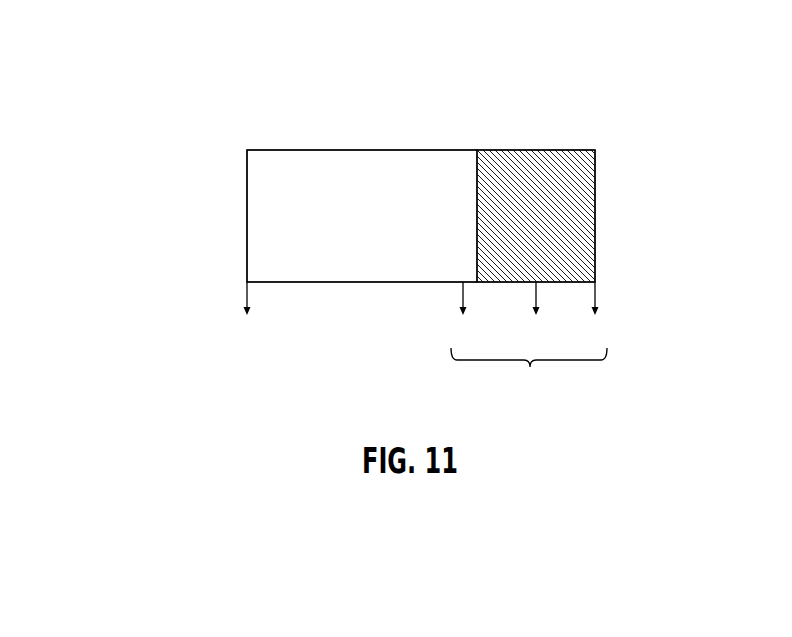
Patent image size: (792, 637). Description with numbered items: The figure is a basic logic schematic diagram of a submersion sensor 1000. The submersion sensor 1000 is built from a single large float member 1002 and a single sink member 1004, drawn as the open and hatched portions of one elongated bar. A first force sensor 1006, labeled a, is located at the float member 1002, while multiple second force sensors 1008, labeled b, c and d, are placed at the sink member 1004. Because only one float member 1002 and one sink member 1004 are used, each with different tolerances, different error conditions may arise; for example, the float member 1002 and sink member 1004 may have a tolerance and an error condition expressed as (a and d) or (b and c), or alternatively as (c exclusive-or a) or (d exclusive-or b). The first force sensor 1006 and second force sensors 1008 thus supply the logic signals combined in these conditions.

The submersion sensor 1000 is at (216, 126).
The float member 1002 is at (278, 201).
The sink member 1004 is at (597, 217).
The first force sensor 1006 is at (247, 300).
The second force sensors 1008 is at (530, 367).